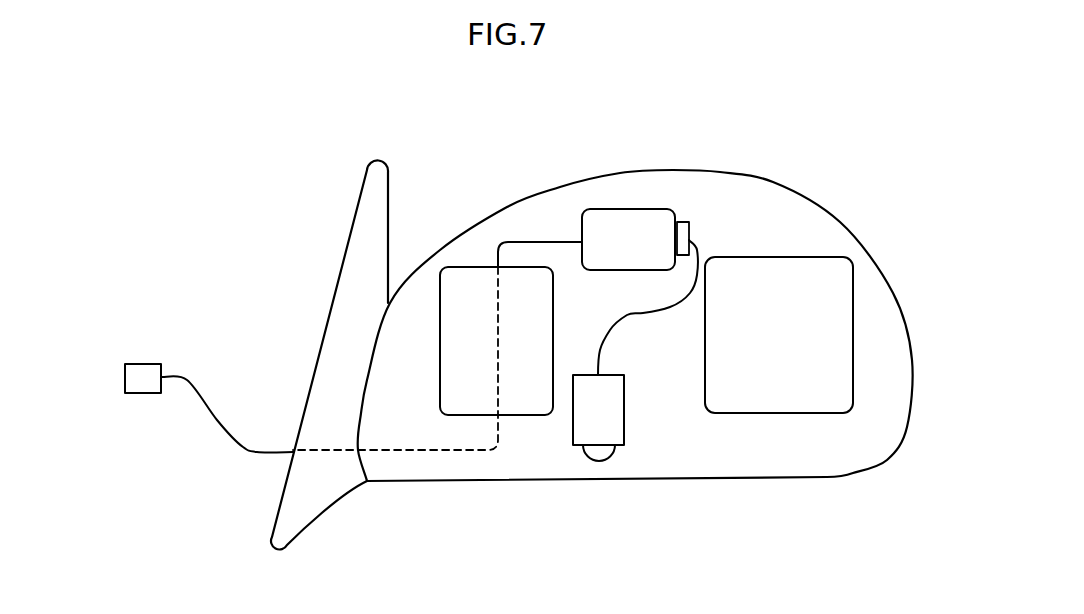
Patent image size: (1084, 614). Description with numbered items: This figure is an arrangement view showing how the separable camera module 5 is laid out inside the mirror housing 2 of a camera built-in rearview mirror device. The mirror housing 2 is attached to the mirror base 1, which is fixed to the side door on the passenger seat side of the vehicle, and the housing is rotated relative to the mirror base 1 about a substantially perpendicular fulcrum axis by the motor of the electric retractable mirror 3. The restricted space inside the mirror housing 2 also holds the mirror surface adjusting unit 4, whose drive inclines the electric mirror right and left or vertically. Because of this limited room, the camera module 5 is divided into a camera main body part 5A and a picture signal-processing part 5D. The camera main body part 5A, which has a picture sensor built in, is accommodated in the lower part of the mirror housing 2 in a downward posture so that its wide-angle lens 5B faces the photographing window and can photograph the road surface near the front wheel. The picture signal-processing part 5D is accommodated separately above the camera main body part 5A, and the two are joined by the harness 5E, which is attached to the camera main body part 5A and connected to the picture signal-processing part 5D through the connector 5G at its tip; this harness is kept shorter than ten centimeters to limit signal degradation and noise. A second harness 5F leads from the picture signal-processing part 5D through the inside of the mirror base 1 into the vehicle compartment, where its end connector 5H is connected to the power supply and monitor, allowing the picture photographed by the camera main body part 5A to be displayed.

The mirror base 1 is at (358, 245).
The mirror housing 2 is at (770, 180).
The electric retractable mirror 3 is at (477, 263).
The mirror surface adjusting unit 4 is at (787, 257).
The camera module 5 is at (587, 461).
The camera main body part 5A is at (624, 412).
The lens 5B is at (599, 496).
The picture signal-processing part 5D is at (637, 208).
The harness 5E is at (697, 243).
The harness 5F is at (535, 240).
The connector 5G is at (683, 222).
The connector 5H is at (143, 364).